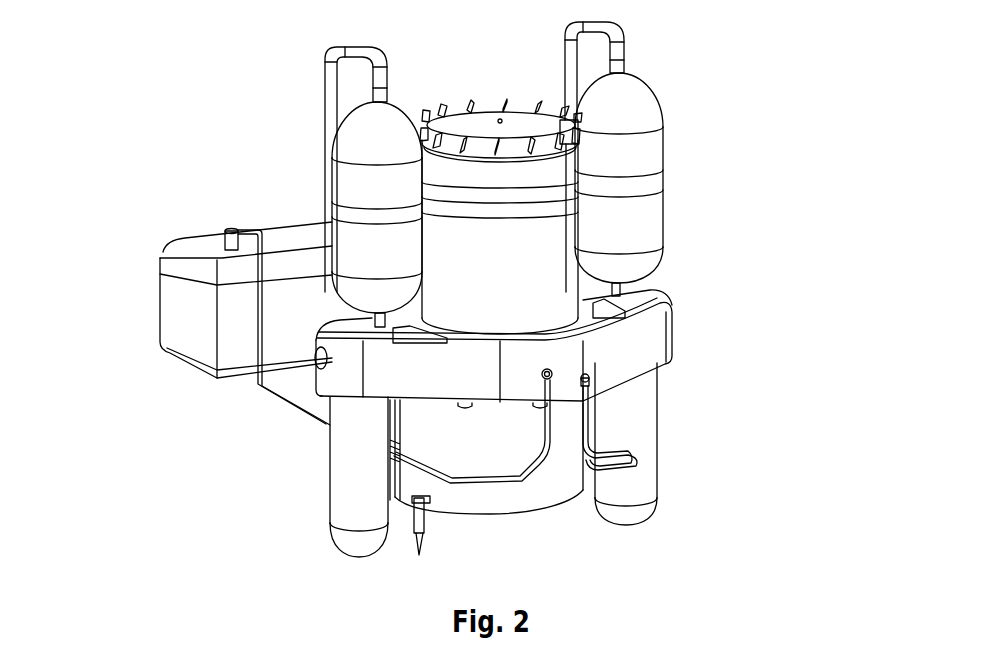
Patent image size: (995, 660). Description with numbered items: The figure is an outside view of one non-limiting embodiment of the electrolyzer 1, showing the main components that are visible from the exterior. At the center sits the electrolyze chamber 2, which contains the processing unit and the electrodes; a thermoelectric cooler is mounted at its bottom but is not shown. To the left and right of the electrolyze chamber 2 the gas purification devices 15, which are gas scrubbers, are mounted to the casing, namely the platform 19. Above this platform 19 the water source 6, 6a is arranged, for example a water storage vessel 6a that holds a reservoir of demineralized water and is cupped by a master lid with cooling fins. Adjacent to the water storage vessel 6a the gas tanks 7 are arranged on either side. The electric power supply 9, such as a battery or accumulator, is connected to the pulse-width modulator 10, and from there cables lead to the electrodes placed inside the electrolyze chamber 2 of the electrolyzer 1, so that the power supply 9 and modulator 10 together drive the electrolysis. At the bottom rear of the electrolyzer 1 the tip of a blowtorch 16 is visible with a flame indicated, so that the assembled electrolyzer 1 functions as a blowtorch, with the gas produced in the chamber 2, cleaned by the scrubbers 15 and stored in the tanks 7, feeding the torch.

The electrolyzer 1 is at (440, 289).
The electrolyze chamber 2 is at (493, 448).
The water source 6 is at (374, 216).
The water storage vessel 6a is at (505, 255).
The gas tanks 7 is at (375, 177).
The electric power supply 9 is at (240, 323).
The pulse-width modulator 10 is at (180, 253).
The gas purification devices 15 is at (360, 457).
The blowtorch 16 is at (418, 522).
The platform 19 is at (650, 330).